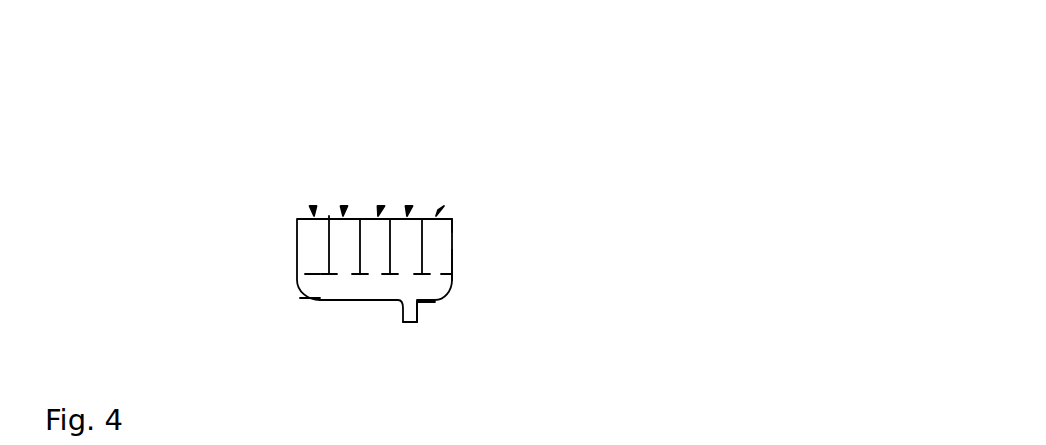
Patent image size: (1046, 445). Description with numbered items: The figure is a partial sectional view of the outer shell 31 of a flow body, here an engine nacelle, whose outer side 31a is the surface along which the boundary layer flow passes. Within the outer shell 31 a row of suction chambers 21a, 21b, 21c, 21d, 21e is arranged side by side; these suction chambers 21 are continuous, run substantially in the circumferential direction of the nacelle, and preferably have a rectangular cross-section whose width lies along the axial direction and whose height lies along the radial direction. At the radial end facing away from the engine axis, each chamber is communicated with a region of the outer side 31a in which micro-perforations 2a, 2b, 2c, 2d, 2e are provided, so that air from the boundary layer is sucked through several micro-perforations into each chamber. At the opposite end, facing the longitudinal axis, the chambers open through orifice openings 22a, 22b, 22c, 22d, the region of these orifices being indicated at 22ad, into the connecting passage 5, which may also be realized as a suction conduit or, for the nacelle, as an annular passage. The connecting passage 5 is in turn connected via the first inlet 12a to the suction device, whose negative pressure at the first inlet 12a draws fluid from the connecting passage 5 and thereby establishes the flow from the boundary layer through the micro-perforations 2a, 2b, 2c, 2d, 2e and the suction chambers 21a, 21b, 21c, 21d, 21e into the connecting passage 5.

The outer shell 31 is at (621, 136).
The outer side 31a is at (449, 218).
The suction chamber 21 is at (300, 232).
The suction chamber 21a is at (323, 227).
The suction chamber 21b is at (340, 256).
The suction chamber 21c is at (383, 243).
The suction chamber 21d is at (407, 250).
The suction chamber 21e is at (437, 263).
The micro-perforation 2a is at (313, 207).
The micro-perforation 2b is at (344, 207).
The micro-perforation 2c is at (381, 207).
The micro-perforation 2d is at (409, 207).
The micro-perforation 2e is at (441, 208).
The orifice opening 22a is at (317, 277).
The orifice opening 22b is at (338, 276).
The orifice opening 22c is at (378, 278).
The orifice opening 22d is at (392, 300).
The partition wall region 22ad is at (387, 323).
The connecting passage 5 is at (358, 286).
The first inlet 12a is at (433, 278).